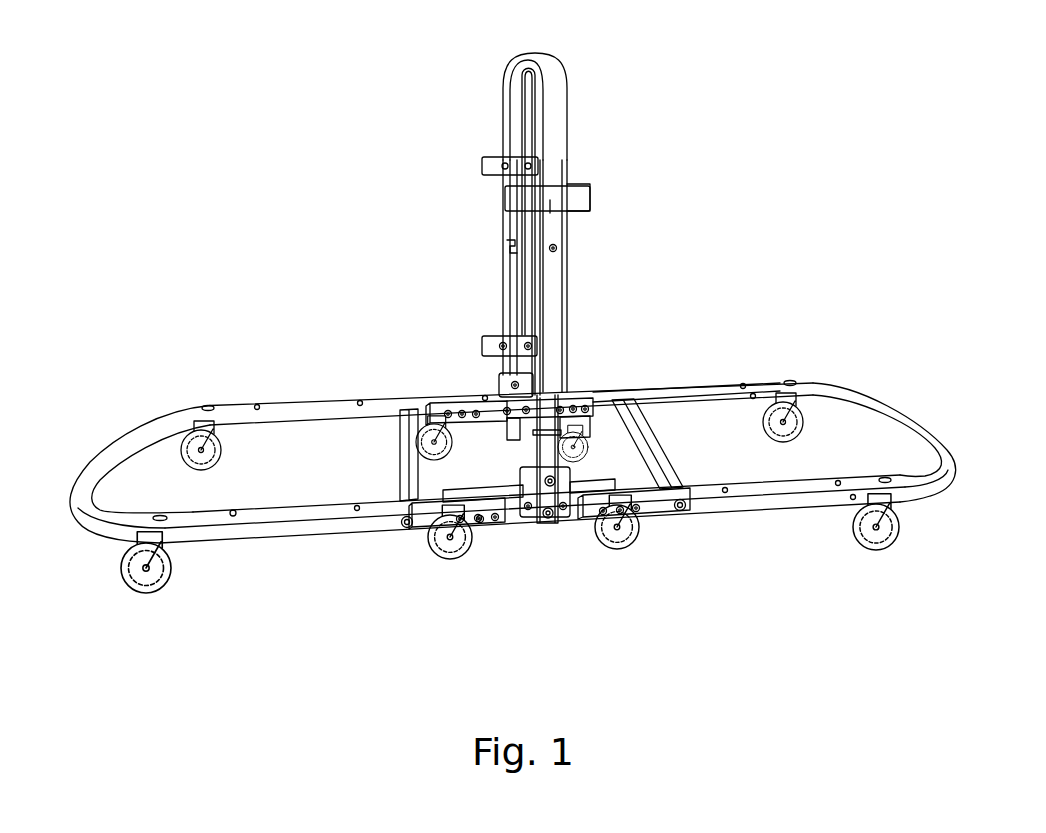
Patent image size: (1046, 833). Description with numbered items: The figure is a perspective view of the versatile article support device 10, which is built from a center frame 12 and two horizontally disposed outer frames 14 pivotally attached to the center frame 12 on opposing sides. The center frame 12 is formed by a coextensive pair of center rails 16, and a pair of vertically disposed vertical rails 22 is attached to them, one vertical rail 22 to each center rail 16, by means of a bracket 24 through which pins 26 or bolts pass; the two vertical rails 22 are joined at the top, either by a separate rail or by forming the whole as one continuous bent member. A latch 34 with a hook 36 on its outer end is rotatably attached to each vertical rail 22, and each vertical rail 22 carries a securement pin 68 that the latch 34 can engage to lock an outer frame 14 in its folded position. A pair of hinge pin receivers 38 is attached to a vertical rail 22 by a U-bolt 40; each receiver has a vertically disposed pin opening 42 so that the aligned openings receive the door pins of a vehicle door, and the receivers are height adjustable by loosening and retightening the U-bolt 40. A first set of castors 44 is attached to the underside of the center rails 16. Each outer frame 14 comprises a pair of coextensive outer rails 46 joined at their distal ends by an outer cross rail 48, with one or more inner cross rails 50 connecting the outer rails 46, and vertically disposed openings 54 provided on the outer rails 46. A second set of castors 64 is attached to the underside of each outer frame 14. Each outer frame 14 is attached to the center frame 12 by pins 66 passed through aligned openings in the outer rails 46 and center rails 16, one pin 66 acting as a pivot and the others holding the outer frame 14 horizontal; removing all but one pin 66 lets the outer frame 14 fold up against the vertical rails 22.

The versatile article support device 10 is at (547, 622).
The center frame 12 is at (500, 280).
The outer frame 14 is at (373, 536).
The center rail 16 is at (577, 394).
The vertical rail 22 is at (510, 307).
The bracket 24 is at (494, 386).
The pin 26 is at (527, 514).
The latch 34 is at (532, 56).
The hook 36 is at (507, 252).
The hinge pin receiver 38 is at (600, 197).
The U-bolt 40 is at (555, 213).
The pin opening 42 is at (490, 188).
The first set of castors 44 is at (448, 546).
The outer rail 46 is at (289, 402).
The outer cross rail 48 is at (98, 458).
The inner cross rail 50 is at (407, 477).
The vertically disposed opening 54 is at (233, 516).
The second set of castors 64 is at (138, 572).
The pin 66 is at (480, 523).
The securement pin 68 is at (558, 248).